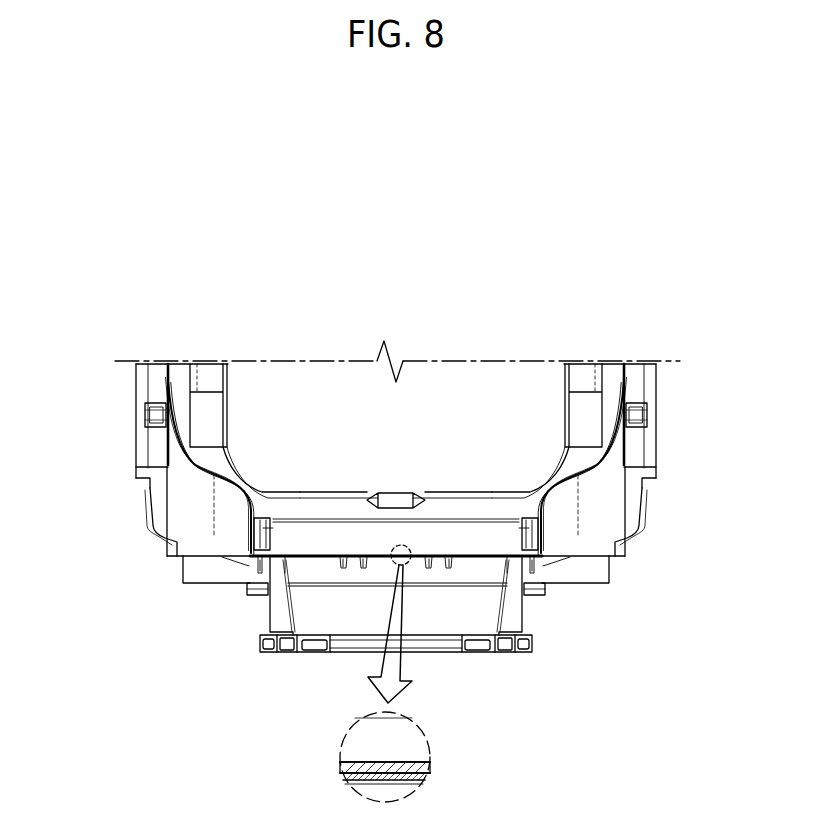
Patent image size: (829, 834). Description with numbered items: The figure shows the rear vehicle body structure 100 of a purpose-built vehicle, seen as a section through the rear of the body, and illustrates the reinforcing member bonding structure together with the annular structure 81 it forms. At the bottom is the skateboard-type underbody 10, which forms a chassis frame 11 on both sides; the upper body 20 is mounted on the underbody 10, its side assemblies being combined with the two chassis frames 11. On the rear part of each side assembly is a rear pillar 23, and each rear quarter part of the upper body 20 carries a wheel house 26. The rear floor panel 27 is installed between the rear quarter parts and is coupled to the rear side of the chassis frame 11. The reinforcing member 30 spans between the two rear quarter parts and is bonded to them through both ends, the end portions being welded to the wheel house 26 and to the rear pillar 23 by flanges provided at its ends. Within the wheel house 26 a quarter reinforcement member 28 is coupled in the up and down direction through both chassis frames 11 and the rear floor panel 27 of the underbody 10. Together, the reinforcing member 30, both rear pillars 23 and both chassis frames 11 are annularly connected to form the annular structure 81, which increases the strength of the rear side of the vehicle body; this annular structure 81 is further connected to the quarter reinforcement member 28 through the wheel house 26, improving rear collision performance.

The rear vehicle body structure 100 is at (398, 197).
The upper body 20 is at (666, 407).
The quarter reinforcement member 28 is at (208, 468).
The rear pillar 23 is at (136, 469).
The wheel house 26 is at (198, 500).
The chassis frame 11 is at (250, 572).
The underbody 10 is at (258, 615).
The annular structure 81 is at (432, 583).
The reinforcing member 30 is at (410, 760).
The rear floor panel 27 is at (408, 781).